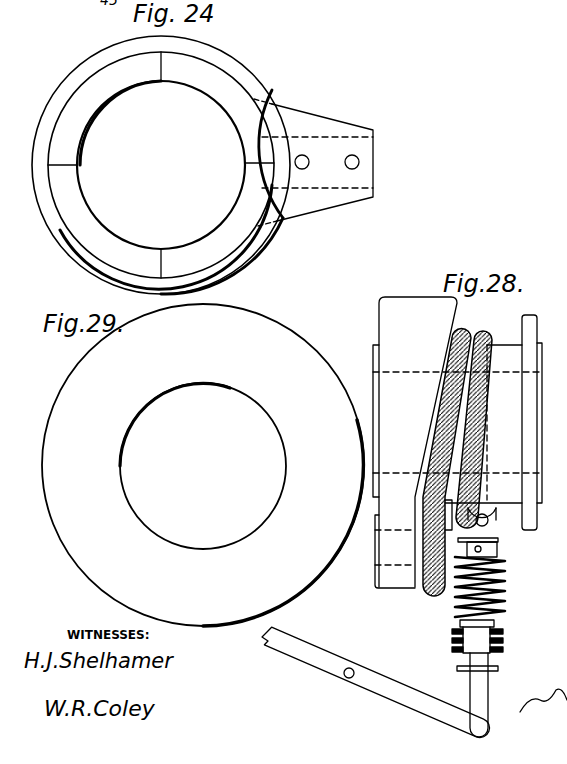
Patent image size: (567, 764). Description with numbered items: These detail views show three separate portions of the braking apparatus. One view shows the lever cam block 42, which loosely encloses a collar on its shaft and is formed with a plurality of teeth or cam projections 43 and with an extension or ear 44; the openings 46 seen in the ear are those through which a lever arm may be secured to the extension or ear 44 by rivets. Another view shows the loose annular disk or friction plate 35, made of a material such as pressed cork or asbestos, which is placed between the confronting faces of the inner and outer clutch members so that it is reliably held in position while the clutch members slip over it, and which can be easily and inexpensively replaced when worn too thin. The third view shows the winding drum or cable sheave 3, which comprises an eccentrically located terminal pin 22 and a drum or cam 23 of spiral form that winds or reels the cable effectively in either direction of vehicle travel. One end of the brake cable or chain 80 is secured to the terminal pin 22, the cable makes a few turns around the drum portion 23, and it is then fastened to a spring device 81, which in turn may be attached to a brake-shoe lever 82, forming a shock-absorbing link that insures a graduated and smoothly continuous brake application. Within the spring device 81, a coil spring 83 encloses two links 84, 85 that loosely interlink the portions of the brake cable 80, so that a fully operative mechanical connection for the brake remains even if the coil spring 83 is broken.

In FIG. 28, the winding drum or cable sheave 3 is at (391, 301).
In FIG. 28, the terminal pin 22 is at (441, 590).
In FIG. 28, the drum or cam 23 is at (504, 493).
In FIG. 29, the annular disk or friction plate 35 is at (93, 568).
In FIG. 24, the lever cam block 42 is at (76, 73).
In FIG. 24, the teeth or cam projections 43 is at (161, 72).
In FIG. 24, the extension or ear 44 is at (341, 128).
In FIG. 24, the openings 46 is at (353, 168).
In FIG. 28, the brake cable or chain 80 is at (468, 334).
In FIG. 28, the spring device 81 is at (554, 601).
In FIG. 28, the brake-shoe lever 82 is at (332, 657).
In FIG. 28, the coil spring 83 is at (503, 567).
In FIG. 28, the link 84 is at (494, 619).
In FIG. 28, the link 85 is at (505, 636).